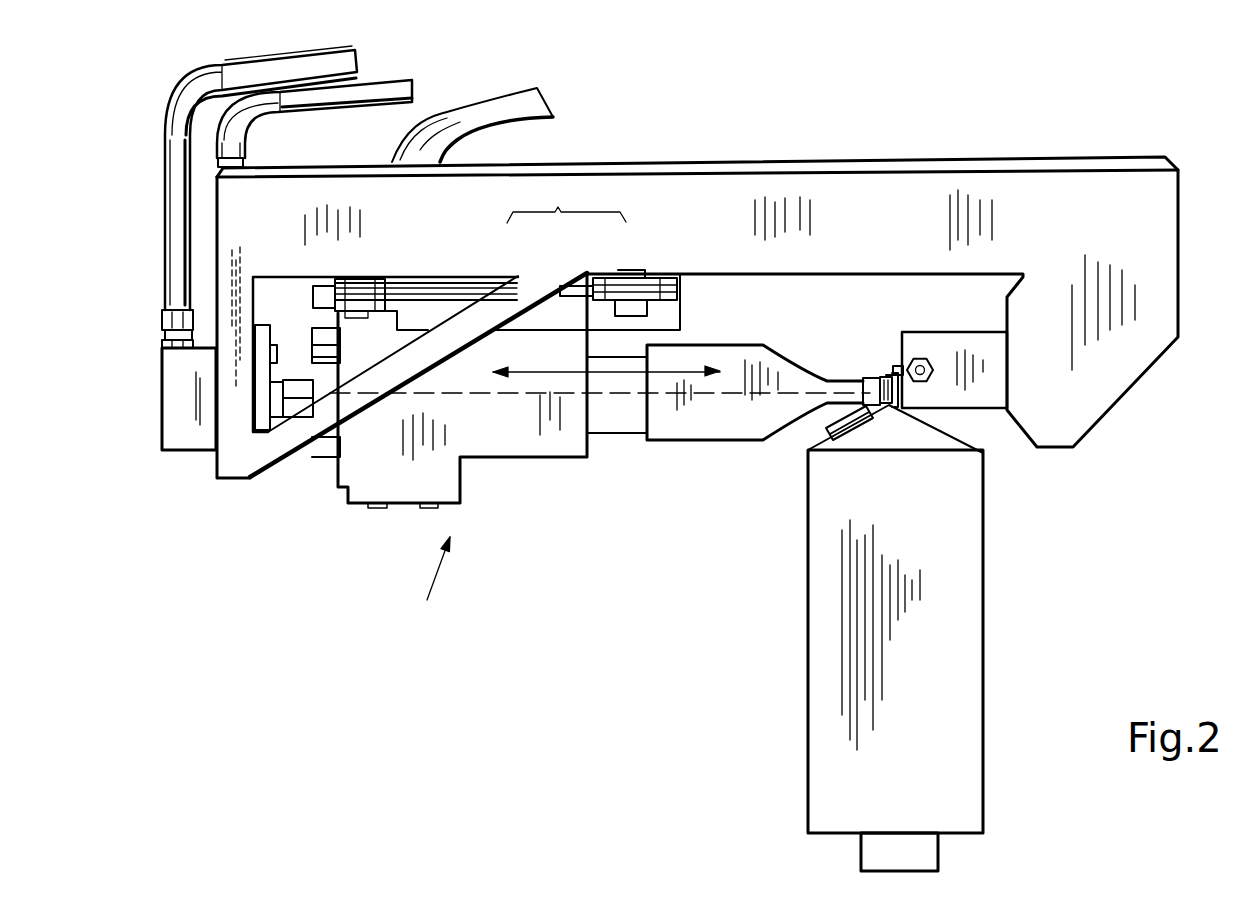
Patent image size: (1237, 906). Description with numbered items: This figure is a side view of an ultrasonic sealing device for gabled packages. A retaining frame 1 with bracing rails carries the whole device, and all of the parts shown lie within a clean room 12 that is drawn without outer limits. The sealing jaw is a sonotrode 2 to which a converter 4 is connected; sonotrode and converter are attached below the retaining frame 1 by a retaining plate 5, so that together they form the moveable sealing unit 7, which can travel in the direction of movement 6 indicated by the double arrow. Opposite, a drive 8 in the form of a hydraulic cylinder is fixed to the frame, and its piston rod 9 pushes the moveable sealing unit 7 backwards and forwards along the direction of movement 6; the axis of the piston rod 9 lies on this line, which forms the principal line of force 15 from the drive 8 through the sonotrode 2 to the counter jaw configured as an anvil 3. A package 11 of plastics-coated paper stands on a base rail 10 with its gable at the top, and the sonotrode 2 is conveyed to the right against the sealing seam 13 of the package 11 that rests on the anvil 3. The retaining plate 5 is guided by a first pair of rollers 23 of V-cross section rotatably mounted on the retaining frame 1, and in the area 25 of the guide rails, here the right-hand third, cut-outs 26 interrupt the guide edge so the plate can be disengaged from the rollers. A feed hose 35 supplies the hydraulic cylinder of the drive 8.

The retaining frame 1 is at (918, 207).
The sonotrode 2 is at (733, 420).
The anvil 3 is at (978, 388).
The converter 4 is at (507, 423).
The retaining plate 5 is at (523, 320).
The direction of movement 6 is at (680, 370).
The moveable sealing unit 7 is at (431, 590).
The drive 8 is at (187, 387).
The piston rod 9 is at (285, 385).
The base rail 10 is at (921, 852).
The package 11 is at (934, 615).
The clean room 12 is at (650, 640).
The sealing seam 13 is at (893, 405).
The principal line of force 15 is at (702, 395).
The first lower pair of rollers 23 is at (634, 275).
The area 25 is at (557, 208).
The cut-outs 26 is at (570, 293).
The feed hose 35 is at (170, 145).